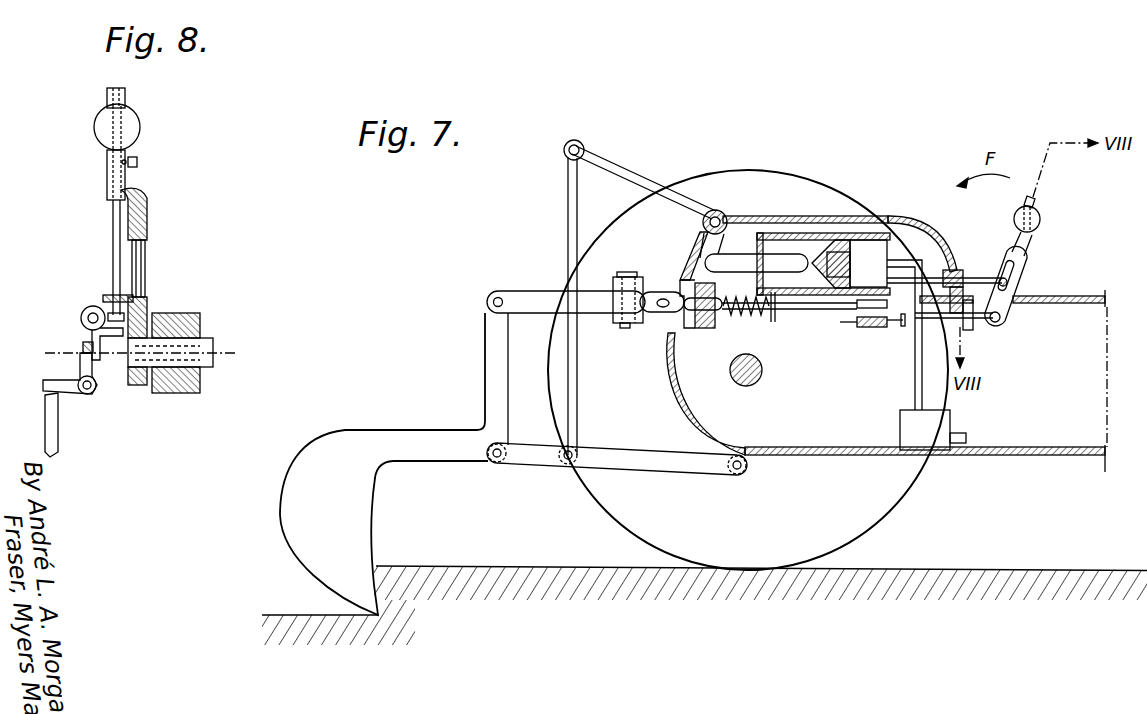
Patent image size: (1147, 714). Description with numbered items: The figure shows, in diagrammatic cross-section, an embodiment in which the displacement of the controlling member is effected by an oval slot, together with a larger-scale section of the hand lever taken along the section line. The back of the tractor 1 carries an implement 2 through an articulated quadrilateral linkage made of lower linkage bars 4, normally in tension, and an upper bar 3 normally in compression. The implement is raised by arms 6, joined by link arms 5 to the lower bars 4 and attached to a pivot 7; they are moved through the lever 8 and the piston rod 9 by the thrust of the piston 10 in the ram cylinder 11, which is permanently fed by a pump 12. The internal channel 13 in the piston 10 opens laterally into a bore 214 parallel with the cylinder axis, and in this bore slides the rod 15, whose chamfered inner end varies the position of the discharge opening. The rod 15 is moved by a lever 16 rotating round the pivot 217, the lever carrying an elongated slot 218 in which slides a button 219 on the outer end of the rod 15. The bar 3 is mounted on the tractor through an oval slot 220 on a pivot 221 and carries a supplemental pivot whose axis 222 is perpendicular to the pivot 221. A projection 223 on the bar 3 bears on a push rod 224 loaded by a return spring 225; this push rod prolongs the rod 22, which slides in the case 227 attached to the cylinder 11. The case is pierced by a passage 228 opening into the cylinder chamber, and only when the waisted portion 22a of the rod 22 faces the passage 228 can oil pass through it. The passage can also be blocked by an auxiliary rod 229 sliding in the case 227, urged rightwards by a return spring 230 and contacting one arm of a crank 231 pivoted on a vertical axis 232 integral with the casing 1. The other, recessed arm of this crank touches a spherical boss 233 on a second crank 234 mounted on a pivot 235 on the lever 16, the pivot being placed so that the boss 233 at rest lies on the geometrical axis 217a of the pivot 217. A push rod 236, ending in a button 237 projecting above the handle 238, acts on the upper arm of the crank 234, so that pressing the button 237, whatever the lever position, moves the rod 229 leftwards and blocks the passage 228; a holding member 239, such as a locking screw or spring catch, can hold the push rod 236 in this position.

In FIG. 7, the tractor 1 is at (1000, 456).
In FIG. 7, the implement 2 is at (366, 514).
In FIG. 7, the upper bar 3 is at (520, 300).
In FIG. 7, the lower linkage bars 4 is at (531, 463).
In FIG. 7, the link arms 5 is at (568, 382).
In FIG. 7, the arms 6 is at (614, 174).
In FIG. 7, the pivot 7 is at (714, 208).
In FIG. 7, the lever 8 is at (692, 243).
In FIG. 7, the piston rod 9 is at (744, 262).
In FIG. 7, the piston 10 is at (812, 245).
In FIG. 7, the ram cylinder 11 is at (905, 250).
In FIG. 7, the pump 12 is at (915, 432).
In FIG. 7, the internal channel 13 is at (845, 252).
In FIG. 7, the rod 15 is at (961, 270).
In FIG. 8, the lever 16 is at (110, 180).
In FIG. 7, the lever 16 is at (1032, 246).
In FIG. 7, the rod 22 is at (790, 314).
In FIG. 7, the waisted portion 22a is at (938, 248).
In FIG. 7, the bore 214 is at (838, 312).
In FIG. 8, the pivot 217 is at (168, 393).
In FIG. 7, the pivot 217 is at (1000, 322).
In FIG. 8, the geometrical axis 217a is at (210, 363).
In FIG. 8, the elongated slot 218 is at (140, 252).
In FIG. 7, the elongated slot 218 is at (1015, 275).
In FIG. 7, the button 219 is at (1013, 284).
In FIG. 7, the oval slot 220 is at (640, 325).
In FIG. 7, the pivot 221 is at (662, 297).
In FIG. 7, the axis 222 is at (626, 330).
In FIG. 7, the projection 223 is at (668, 345).
In FIG. 7, the push rod 224 is at (702, 330).
In FIG. 7, the return spring 225 is at (755, 314).
In FIG. 7, the case 227 is at (893, 328).
In FIG. 7, the passage 228 is at (868, 330).
In FIG. 8, the rod 229 is at (58, 437).
In FIG. 7, the rod 229 is at (975, 326).
In FIG. 7, the return spring 230 is at (903, 330).
In FIG. 8, the crank 231 is at (63, 383).
In FIG. 8, the vertical axis 232 is at (91, 393).
In FIG. 7, the vertical axis 232 is at (978, 300).
In FIG. 8, the spherical boss 233 is at (83, 345).
In FIG. 8, the second crank 234 is at (106, 298).
In FIG. 8, the pivot 235 is at (83, 318).
In FIG. 8, the push rod 236 is at (113, 243).
In FIG. 8, the button 237 is at (107, 93).
In FIG. 7, the button 237 is at (1036, 204).
In FIG. 8, the handle 238 is at (97, 128).
In FIG. 7, the handle 238 is at (1027, 219).
In FIG. 8, the holding member 239 is at (138, 162).